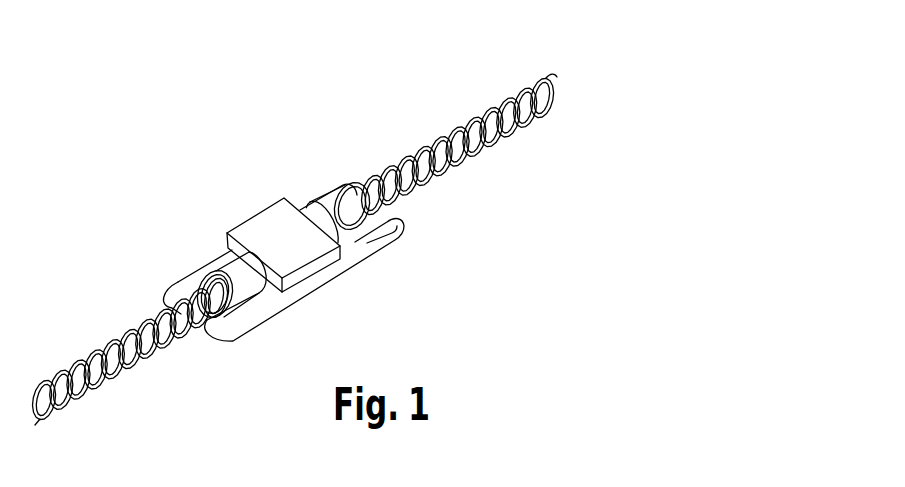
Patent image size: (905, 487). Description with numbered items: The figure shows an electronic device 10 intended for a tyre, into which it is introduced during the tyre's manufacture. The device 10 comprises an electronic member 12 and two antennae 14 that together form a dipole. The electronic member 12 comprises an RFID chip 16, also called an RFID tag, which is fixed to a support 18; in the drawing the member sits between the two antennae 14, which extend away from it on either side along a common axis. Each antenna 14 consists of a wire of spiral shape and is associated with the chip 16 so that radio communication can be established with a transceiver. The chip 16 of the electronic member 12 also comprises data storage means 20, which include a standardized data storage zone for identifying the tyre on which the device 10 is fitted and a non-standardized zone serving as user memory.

The electronic device 10 is at (302, 214).
The electronic member 12 is at (261, 184).
The antenna 14 is at (467, 190).
The RFID chip 16 is at (279, 257).
The support 18 is at (403, 234).
The data storage means 20 is at (297, 196).